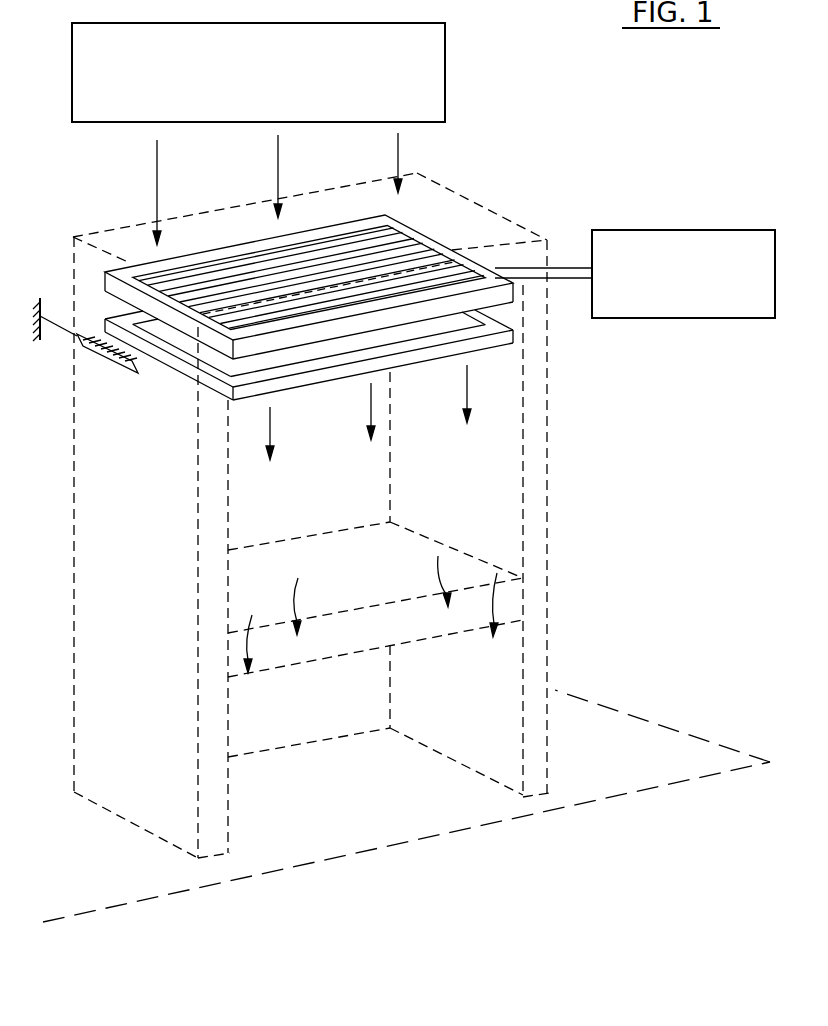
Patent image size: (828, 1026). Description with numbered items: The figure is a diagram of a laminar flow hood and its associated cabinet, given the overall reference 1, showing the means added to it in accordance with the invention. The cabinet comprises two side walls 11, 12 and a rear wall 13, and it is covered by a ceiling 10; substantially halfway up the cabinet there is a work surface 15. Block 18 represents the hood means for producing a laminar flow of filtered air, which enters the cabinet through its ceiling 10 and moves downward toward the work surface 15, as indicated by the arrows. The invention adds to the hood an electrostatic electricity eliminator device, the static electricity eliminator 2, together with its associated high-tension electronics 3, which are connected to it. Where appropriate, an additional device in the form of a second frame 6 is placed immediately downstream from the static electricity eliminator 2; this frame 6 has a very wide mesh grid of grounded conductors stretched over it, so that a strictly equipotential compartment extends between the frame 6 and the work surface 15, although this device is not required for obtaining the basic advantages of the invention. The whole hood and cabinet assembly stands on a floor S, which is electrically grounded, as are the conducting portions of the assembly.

The laminar flow hood and associated cabinet 1 is at (352, 507).
The static electricity eliminator 2 is at (448, 239).
The high-tension electronics 3 is at (697, 230).
The frame 6 is at (177, 370).
The ceiling 10 is at (457, 213).
The side wall 11 is at (97, 683).
The side wall 12 is at (537, 450).
The rear wall 13 is at (303, 728).
The work surface 15 is at (327, 553).
The hood means for producing a laminar flow of filtered air 18 is at (445, 62).
The floor S is at (655, 747).